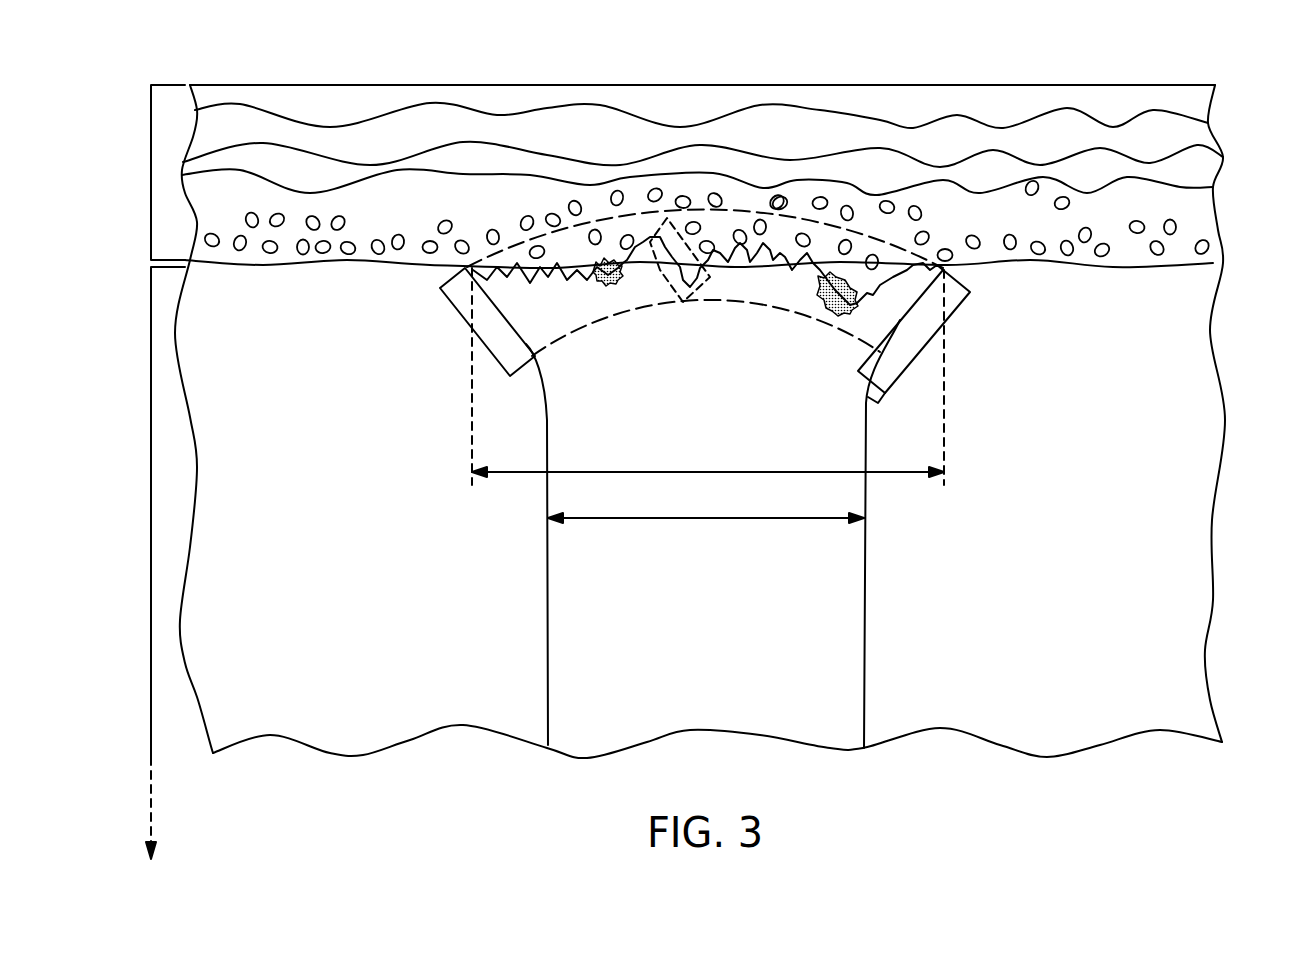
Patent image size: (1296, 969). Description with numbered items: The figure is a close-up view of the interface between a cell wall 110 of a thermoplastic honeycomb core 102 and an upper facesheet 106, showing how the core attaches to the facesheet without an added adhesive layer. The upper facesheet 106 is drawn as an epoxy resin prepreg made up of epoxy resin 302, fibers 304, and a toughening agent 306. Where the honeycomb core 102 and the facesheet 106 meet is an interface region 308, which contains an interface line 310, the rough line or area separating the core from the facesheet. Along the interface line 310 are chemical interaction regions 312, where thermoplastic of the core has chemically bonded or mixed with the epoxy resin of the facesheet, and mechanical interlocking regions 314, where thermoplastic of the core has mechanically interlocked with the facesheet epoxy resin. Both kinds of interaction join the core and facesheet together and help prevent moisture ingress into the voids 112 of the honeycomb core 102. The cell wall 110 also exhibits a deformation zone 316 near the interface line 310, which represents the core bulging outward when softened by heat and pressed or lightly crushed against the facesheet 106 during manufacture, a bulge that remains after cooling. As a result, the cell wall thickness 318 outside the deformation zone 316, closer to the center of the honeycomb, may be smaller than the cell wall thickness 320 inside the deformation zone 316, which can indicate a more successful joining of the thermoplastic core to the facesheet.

The honeycomb core 102 is at (150, 547).
The upper facesheet 106 is at (151, 172).
The cell wall 110 is at (863, 685).
The voids 112 is at (340, 730).
The epoxy resin 302 is at (947, 213).
The fibers 304 is at (1080, 105).
The toughening agent 306 is at (1170, 223).
The interface region 308 is at (473, 335).
The interface line 310 is at (885, 398).
The chemical interaction regions 312 is at (618, 288).
The mechanical interlocking regions 314 is at (665, 290).
The deformation zone 316 is at (927, 347).
The cell wall thickness outside deformation zone 318 is at (688, 522).
The cell wall thickness inside deformation zone 320 is at (663, 472).